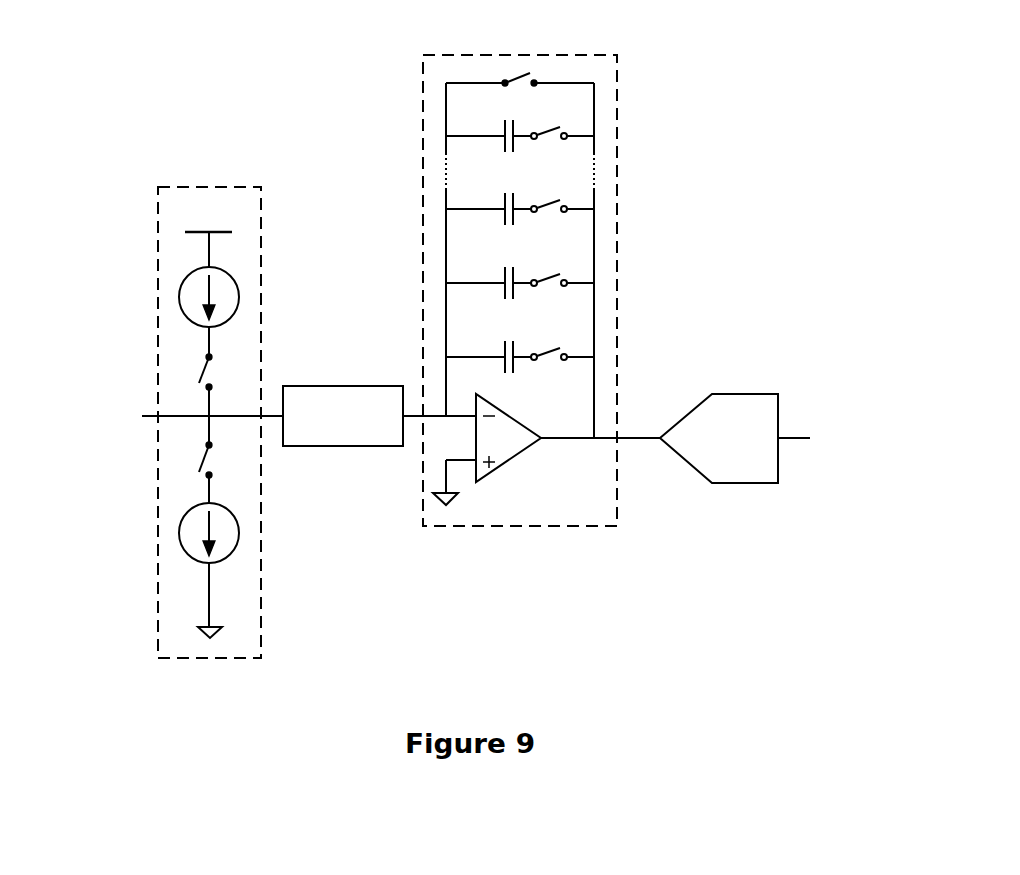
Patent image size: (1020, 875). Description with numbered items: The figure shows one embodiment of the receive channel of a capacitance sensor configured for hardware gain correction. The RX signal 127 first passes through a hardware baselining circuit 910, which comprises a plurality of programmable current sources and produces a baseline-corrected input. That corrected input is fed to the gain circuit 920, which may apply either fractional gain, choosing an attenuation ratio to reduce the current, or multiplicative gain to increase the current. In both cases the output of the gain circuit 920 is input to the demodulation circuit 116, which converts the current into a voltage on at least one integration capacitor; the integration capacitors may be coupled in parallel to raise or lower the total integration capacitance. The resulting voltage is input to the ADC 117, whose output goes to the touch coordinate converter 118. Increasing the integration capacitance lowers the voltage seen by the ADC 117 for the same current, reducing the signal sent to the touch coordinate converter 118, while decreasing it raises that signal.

The demodulation circuit 116 is at (568, 55).
The ADC 117 is at (719, 438).
The touch coordinate converter 118 is at (843, 431).
The RX signal 127 is at (151, 417).
The hardware baselining circuit 910 is at (227, 187).
The gain circuit 920 is at (343, 416).